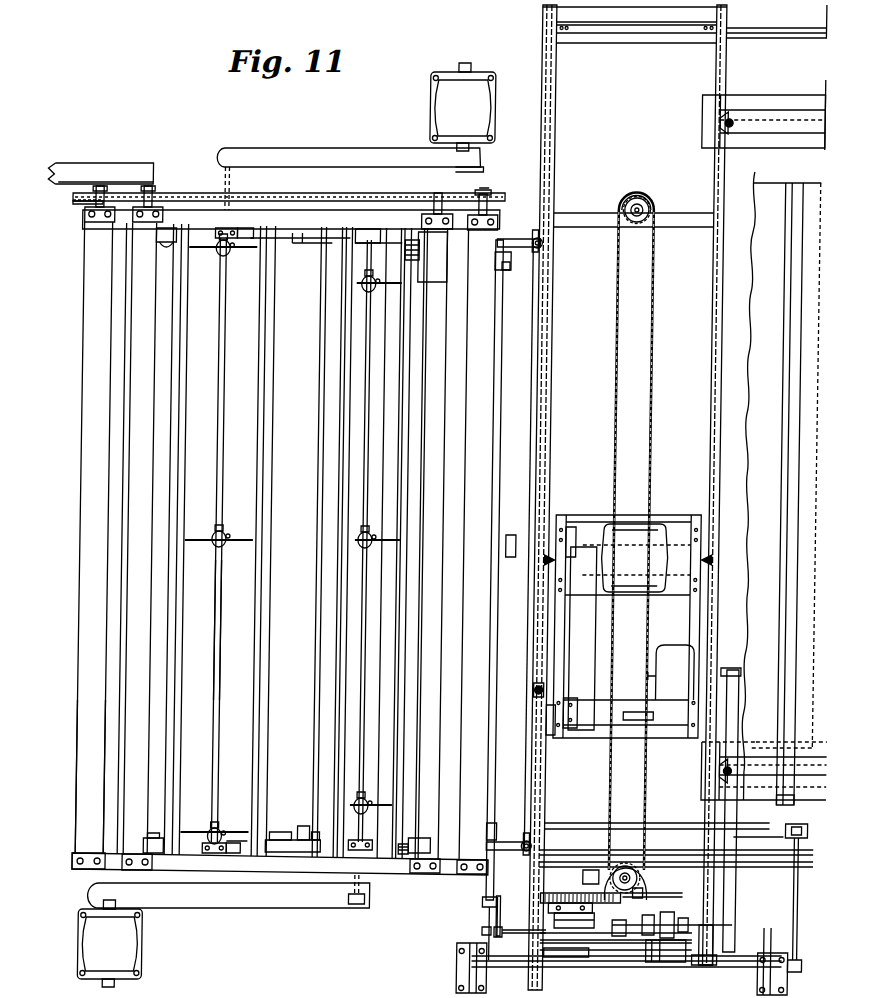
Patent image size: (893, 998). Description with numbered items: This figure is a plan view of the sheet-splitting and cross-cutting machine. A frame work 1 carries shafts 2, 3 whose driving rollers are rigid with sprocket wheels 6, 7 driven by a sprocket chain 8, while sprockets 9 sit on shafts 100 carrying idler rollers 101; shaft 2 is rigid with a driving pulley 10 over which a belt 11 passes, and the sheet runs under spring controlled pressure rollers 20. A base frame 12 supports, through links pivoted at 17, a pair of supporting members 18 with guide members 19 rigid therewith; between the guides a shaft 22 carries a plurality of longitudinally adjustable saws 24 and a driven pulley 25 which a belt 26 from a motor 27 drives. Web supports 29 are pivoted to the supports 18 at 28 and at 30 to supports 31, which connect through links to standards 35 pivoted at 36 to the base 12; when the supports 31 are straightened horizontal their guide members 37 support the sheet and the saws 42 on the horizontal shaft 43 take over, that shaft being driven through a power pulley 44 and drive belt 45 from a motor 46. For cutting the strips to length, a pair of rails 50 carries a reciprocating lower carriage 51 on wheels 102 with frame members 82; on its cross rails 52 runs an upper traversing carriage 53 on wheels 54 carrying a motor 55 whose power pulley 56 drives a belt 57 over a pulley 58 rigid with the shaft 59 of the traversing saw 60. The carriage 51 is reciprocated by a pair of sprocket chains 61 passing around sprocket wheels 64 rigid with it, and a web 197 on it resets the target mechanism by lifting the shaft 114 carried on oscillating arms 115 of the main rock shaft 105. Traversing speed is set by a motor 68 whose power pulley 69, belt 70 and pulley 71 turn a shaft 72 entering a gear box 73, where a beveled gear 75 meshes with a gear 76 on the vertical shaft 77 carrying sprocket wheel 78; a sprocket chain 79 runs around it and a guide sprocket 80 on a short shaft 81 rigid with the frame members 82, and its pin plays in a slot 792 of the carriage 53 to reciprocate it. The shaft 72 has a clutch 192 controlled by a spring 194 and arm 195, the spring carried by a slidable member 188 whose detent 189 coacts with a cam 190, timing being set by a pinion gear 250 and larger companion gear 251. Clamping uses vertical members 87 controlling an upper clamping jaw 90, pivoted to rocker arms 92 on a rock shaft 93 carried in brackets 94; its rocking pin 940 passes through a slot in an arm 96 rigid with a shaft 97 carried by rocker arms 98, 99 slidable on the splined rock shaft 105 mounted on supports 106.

The frame work 1 is at (366, 206).
The shaft 2 is at (62, 199).
The shaft 3 is at (482, 199).
The sprocket wheel 6 is at (74, 204).
The sprocket wheel 7 is at (478, 200).
The sprocket chain 8 is at (325, 199).
The sprockets 9 is at (178, 200).
The driving pulley 10 is at (88, 158).
The belt 11 is at (112, 165).
The base frame 12 is at (104, 740).
The pivot 17 is at (160, 248).
The supporting members 18 is at (246, 238).
The guide members 19 is at (180, 418).
The spring controlled pressure rollers 20 is at (82, 376).
The shaft 22 is at (224, 616).
The saws 24 is at (220, 256).
The driven pulley 25 is at (214, 150).
The belt 26 is at (285, 150).
The motor 27 is at (426, 100).
The pivot 28 is at (282, 838).
The web supports 29 is at (308, 826).
The pivot 30 is at (322, 830).
The supports 31 is at (372, 238).
The standards 35 is at (382, 858).
The pivot 36 is at (438, 262).
The guide members 37 is at (410, 392).
The saws 42 is at (378, 287).
The horizontal shaft 43 is at (425, 660).
The power pulley 44 is at (356, 914).
The drive belt 45 is at (297, 899).
The motor 46 is at (88, 915).
The rails 50 is at (780, 30).
The lower carriage 51 is at (552, 335).
The cross rails 52 is at (551, 355).
The upper traversing carriage 53 is at (570, 515).
The wheels 54 is at (545, 555).
The motor 55 is at (658, 520).
The power pulley 56 is at (578, 545).
The belt 57 is at (600, 620).
The pulley 58 is at (573, 702).
The shaft 59 is at (558, 735).
The traversing saw 60 is at (538, 690).
The sprocket chains 61 is at (755, 108).
The sprocket wheels 64 is at (734, 122).
The motor 68 is at (678, 647).
The power pulley 69 is at (745, 670).
The belt 70 is at (743, 700).
The pulley 71 is at (746, 915).
The shaft 72 is at (735, 915).
The gear box 73 is at (662, 915).
The beveled gear 75 is at (615, 884).
The gear 76 is at (650, 885).
The vertical shaft 77 is at (600, 895).
The sprocket wheel 78 is at (620, 862).
The sprocket chain 79 is at (614, 310).
The guide sprocket 80 is at (634, 224).
The short shaft 81 is at (633, 205).
The frame members 82 is at (676, 215).
The vertical members 87 is at (530, 232).
The upper clamping jaw 90 is at (530, 432).
The rocker arms 92 is at (530, 243).
The rock shaft 93 is at (500, 405).
The brackets 94 is at (508, 270).
The arm 96 is at (492, 905).
The shaft 97 is at (510, 930).
The rocker arm 98 is at (492, 932).
The rocker arm 99 is at (652, 930).
The shafts 100 is at (150, 200).
The idler rollers 101 is at (124, 350).
The wheels 102 is at (700, 33).
The splined rock shaft 105 is at (805, 962).
The supports 106 is at (472, 955).
The shaft 114 is at (820, 828).
The oscillating arms 115 is at (803, 930).
The slidable member 188 is at (600, 962).
The detent 189 is at (598, 970).
The cam 190 is at (568, 952).
The clutch 192 is at (700, 905).
The spring 194 is at (665, 965).
The arm 195 is at (698, 915).
The web 197 is at (755, 837).
The pinion gear 250 is at (585, 921).
The larger companion gear 251 is at (590, 870).
The slot 792 is at (636, 740).
The rocking pin 940 is at (510, 900).